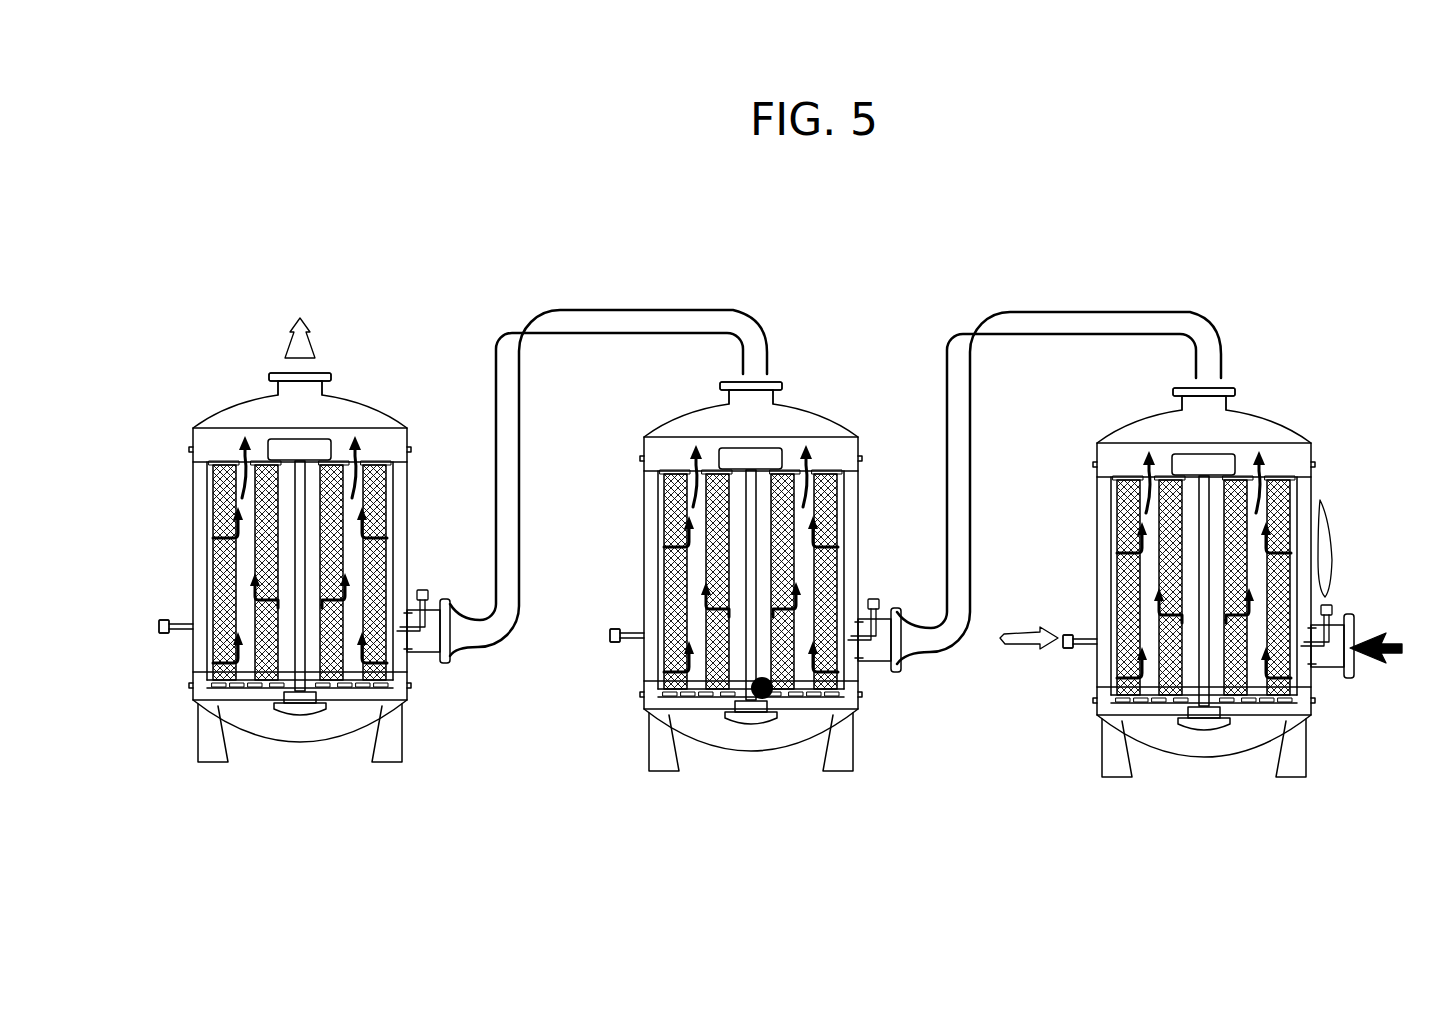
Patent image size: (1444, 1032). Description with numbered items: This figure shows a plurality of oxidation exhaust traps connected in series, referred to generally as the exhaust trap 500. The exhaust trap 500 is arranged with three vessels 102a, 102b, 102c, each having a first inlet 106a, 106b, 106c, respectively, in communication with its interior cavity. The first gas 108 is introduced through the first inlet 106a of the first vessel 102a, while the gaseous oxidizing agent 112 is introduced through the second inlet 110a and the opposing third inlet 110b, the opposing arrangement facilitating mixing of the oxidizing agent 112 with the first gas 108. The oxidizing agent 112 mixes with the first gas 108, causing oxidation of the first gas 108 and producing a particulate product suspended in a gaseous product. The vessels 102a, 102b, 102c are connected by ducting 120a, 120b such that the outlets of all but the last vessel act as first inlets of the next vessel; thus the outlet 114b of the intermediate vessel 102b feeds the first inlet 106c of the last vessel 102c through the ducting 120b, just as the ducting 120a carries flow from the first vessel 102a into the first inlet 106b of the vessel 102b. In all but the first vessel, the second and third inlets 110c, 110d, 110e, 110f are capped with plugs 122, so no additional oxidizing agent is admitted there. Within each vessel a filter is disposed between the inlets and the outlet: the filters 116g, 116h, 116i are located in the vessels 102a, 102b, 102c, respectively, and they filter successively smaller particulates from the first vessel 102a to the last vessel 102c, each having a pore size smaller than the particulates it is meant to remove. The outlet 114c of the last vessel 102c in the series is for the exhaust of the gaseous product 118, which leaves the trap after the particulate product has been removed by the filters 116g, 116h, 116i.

The exhaust trap 500 is at (1180, 242).
The vessel 102a is at (1313, 498).
The vessel 102b is at (855, 496).
The vessel 102c is at (407, 490).
The first inlet 106a is at (1352, 660).
The first inlet 106b is at (886, 666).
The first inlet 106c is at (437, 662).
The first gas 108 is at (1395, 639).
The second inlet 110a is at (1330, 603).
The third inlet 110b is at (1068, 648).
The second inlet 110c is at (878, 600).
The third inlet 110d is at (612, 641).
The second inlet 110e is at (430, 597).
The third inlet 110f is at (158, 638).
The gaseous oxidizing agent 112 is at (1023, 636).
The outlet 114b is at (780, 379).
The outlet 114c is at (312, 378).
The filter 116g is at (1120, 501).
The filter 116h is at (680, 499).
The filter 116i is at (225, 488).
The gaseous product 118 is at (292, 327).
The ducting 120a is at (1085, 318).
The ducting 120b is at (657, 317).
The plug 122 is at (424, 590).